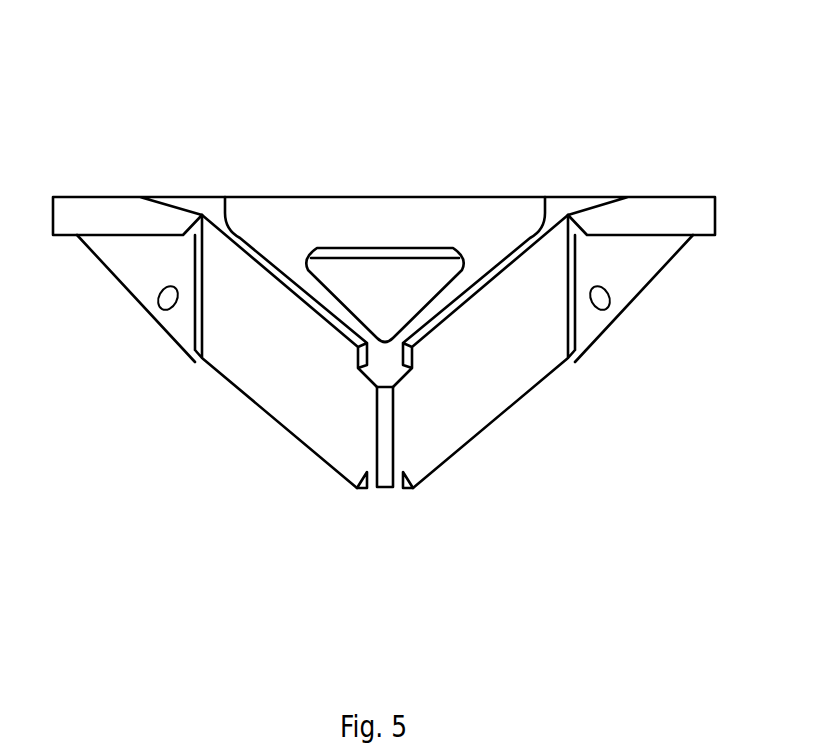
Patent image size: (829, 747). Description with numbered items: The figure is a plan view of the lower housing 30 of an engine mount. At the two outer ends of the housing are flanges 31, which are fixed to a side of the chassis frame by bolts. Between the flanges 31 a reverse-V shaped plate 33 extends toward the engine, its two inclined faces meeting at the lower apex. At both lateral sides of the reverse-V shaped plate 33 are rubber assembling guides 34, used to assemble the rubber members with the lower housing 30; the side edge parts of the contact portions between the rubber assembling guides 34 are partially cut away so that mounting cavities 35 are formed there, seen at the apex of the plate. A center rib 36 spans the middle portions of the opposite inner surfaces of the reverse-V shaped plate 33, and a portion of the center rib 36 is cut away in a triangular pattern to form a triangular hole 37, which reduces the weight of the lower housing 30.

The lower housing 30 is at (172, 150).
The flanges 31 is at (658, 215).
The reverse-V shaped plate 33 is at (288, 355).
The rubber assembling guides 34 is at (338, 472).
The mounting cavities 35 is at (383, 495).
The center rib 36 is at (440, 218).
The triangular hole 37 is at (367, 283).